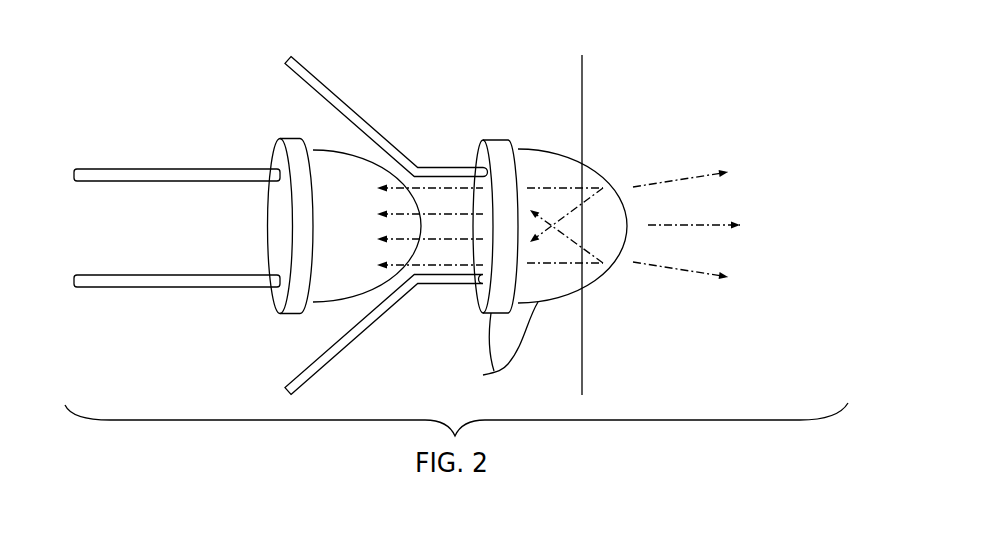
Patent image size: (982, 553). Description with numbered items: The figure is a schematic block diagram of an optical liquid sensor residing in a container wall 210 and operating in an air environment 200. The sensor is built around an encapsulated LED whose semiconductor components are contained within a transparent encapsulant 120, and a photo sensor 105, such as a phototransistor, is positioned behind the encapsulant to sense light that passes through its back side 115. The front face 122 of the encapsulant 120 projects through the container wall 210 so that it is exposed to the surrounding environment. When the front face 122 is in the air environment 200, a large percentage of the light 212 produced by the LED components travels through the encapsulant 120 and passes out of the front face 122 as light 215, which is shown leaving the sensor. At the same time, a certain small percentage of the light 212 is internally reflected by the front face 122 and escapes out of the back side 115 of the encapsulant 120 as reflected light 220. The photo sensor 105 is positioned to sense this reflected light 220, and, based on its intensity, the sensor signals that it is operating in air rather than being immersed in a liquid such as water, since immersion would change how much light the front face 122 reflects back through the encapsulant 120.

The photo sensor 105 is at (277, 140).
The back side of the encapsulant 115 is at (477, 150).
The encapsulant 120 is at (494, 345).
The front face of the encapsulant 122 is at (597, 174).
The air environment 200 is at (793, 66).
The container wall 210 is at (578, 83).
The light produced by the LED components 212 is at (540, 188).
The light passing out of the front face 215 is at (748, 267).
The reflected light 220 is at (447, 190).